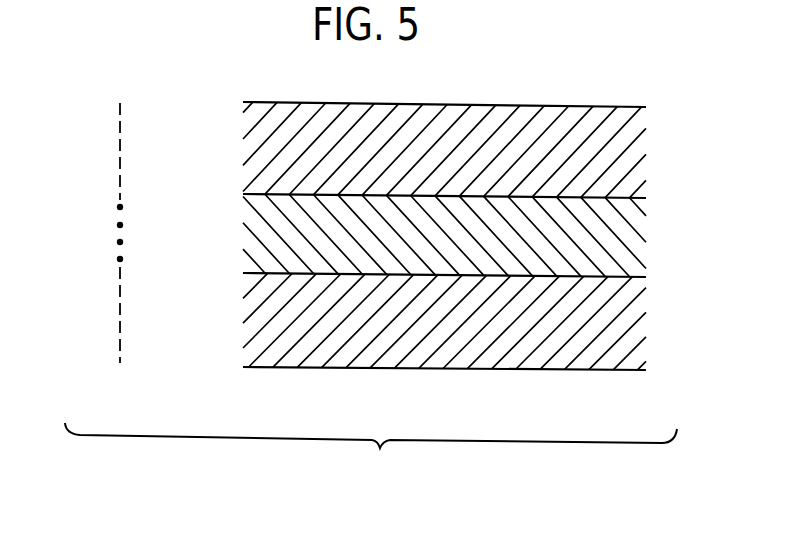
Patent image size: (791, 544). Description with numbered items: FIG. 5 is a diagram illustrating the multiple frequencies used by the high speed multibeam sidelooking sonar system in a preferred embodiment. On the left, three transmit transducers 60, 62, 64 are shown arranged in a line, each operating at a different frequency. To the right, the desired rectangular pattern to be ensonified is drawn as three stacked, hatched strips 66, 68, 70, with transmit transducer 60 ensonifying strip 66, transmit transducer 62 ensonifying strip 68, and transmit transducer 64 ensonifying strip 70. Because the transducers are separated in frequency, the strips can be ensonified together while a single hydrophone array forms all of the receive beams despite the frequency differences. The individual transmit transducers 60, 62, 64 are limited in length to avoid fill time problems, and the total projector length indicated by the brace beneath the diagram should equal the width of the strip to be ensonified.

The transmit transducer 60 is at (108, 148).
The transmit transducer 62 is at (105, 231).
The transmit transducer 64 is at (108, 318).
The strip 66 is at (458, 116).
The strip 68 is at (624, 237).
The strip 70 is at (553, 350).